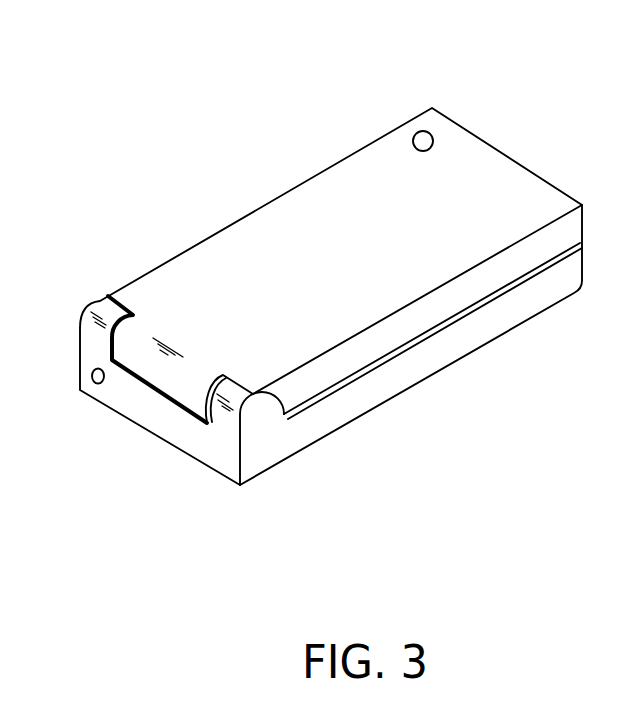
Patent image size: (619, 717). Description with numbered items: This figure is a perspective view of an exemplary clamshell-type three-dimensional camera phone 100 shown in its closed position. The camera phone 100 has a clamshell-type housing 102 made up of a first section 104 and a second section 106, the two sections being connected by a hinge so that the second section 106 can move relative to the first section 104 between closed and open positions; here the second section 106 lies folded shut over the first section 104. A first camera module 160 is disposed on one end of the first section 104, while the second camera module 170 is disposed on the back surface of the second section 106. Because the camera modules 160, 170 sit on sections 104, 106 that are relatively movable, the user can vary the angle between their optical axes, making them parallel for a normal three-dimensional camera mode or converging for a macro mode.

The camera phone 100 is at (107, 77).
The clamshell-type housing 102 is at (157, 433).
The first section 104 is at (340, 425).
The second section 106 is at (247, 242).
The first camera module 160 is at (92, 376).
The second camera module 170 is at (418, 132).